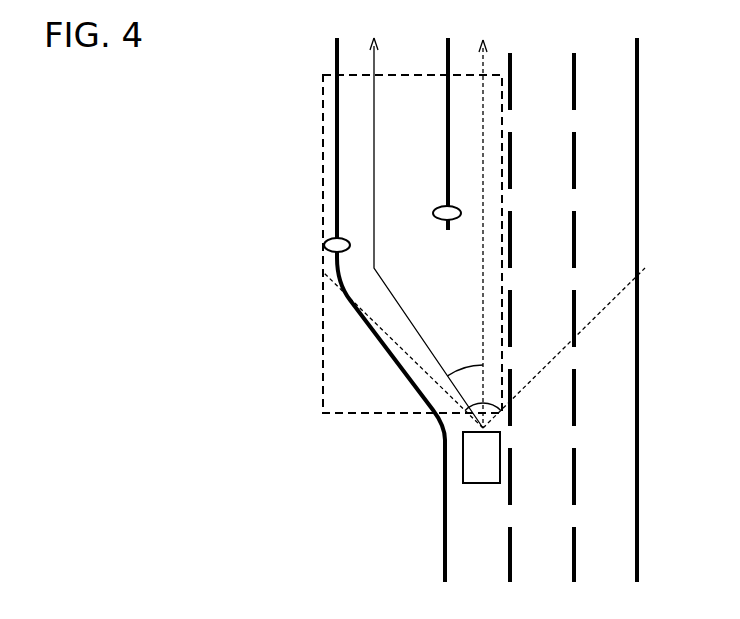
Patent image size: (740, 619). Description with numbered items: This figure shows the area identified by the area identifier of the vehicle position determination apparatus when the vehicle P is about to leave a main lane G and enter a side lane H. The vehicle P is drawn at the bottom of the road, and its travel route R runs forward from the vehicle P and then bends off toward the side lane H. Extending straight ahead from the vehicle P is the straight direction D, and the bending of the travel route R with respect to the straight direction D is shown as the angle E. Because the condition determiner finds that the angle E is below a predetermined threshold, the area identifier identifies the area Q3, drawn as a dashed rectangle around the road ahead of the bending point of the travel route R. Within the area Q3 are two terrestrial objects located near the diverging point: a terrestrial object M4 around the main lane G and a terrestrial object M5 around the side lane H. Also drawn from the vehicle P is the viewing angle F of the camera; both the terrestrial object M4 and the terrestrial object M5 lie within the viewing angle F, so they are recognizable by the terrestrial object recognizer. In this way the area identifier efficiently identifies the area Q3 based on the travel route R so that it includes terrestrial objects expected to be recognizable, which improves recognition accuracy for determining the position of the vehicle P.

The side lane H is at (348, 62).
The main lane G is at (456, 60).
The travel route R is at (373, 134).
The terrestrial object M4 is at (436, 210).
The terrestrial object M5 is at (326, 243).
The area Q3 is at (322, 332).
The straight direction D is at (485, 128).
The angle E is at (483, 365).
The viewing angle F is at (508, 403).
The vehicle P is at (462, 455).